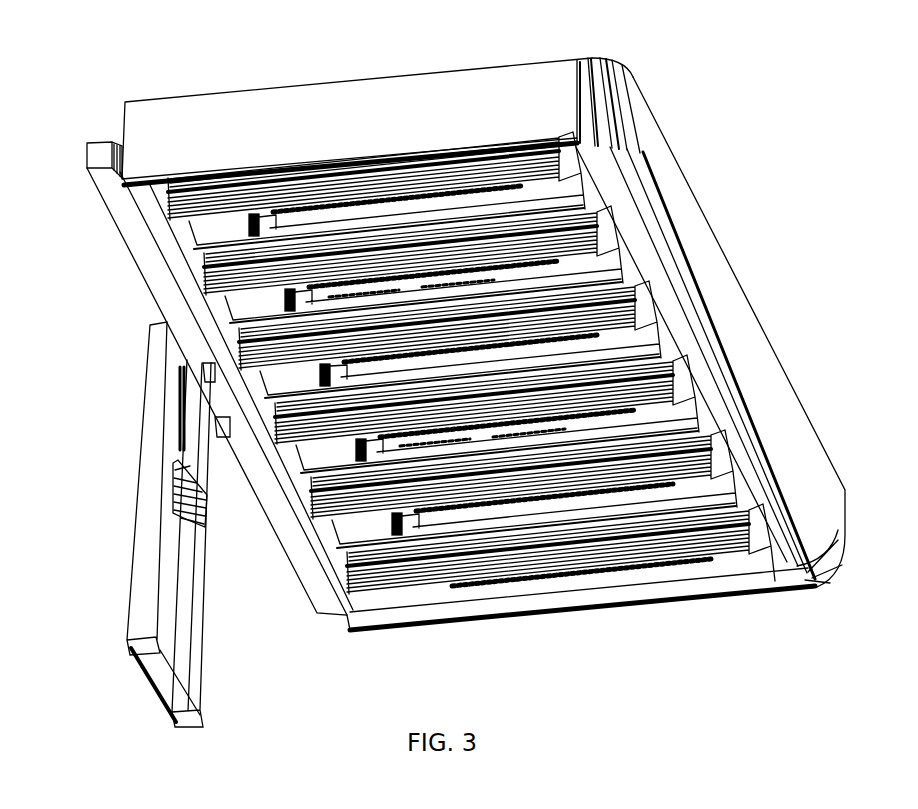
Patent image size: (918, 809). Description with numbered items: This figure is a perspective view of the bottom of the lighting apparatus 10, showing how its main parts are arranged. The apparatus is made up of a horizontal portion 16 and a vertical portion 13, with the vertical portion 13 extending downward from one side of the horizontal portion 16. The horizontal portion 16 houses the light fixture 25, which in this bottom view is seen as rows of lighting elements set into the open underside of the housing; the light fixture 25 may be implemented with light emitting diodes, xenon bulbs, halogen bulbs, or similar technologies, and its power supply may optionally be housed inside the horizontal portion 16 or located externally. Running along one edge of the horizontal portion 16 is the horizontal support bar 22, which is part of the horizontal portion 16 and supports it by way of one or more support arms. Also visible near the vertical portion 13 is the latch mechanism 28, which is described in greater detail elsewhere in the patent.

The lighting apparatus 10 is at (415, 70).
The vertical portion 13 is at (140, 604).
The horizontal portion 16 is at (713, 272).
The horizontal support bar 22 is at (128, 228).
The light fixture 25 is at (636, 527).
The latch mechanism 28 is at (190, 506).